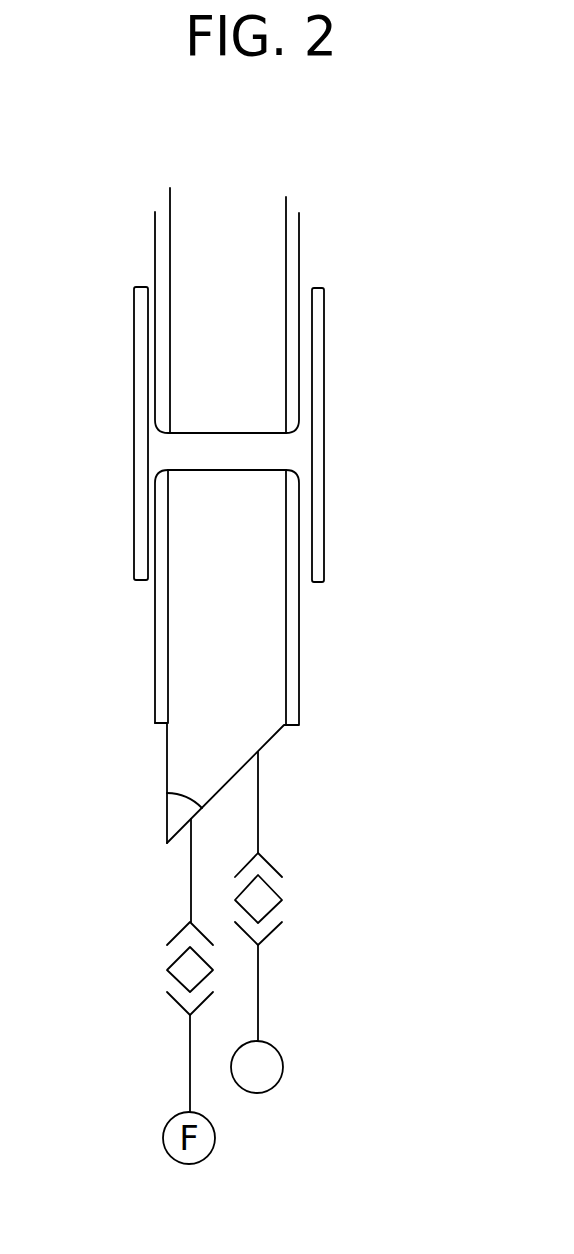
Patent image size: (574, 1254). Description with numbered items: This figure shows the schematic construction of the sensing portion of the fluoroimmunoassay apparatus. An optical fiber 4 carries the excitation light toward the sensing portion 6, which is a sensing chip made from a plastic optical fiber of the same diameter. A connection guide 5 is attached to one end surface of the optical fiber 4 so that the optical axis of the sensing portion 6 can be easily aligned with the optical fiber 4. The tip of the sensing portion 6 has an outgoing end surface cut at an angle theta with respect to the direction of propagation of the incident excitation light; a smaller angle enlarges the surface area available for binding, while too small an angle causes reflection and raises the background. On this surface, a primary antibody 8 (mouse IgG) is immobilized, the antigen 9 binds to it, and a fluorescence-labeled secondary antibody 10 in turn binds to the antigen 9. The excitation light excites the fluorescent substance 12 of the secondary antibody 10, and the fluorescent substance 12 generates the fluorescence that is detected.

The optical fiber 4 is at (263, 262).
The connection guide 5 is at (315, 348).
The sensing portion 6 is at (283, 657).
The primary antibody 8 is at (260, 827).
The antigen 9 is at (285, 903).
The fluorescence-labeled secondary antibody 10 is at (258, 1008).
The fluorescent substance 12 is at (283, 1071).